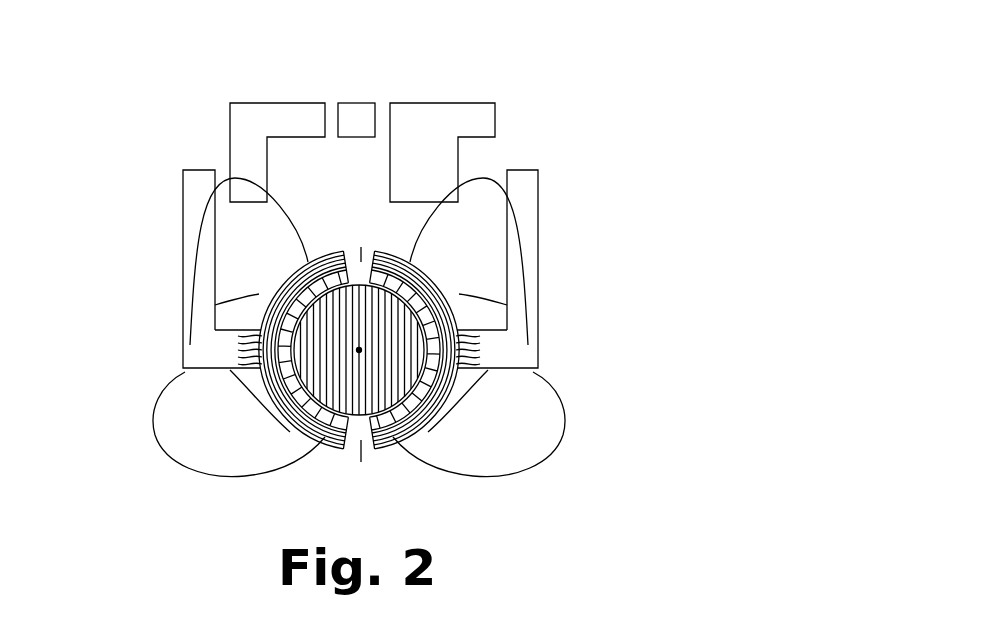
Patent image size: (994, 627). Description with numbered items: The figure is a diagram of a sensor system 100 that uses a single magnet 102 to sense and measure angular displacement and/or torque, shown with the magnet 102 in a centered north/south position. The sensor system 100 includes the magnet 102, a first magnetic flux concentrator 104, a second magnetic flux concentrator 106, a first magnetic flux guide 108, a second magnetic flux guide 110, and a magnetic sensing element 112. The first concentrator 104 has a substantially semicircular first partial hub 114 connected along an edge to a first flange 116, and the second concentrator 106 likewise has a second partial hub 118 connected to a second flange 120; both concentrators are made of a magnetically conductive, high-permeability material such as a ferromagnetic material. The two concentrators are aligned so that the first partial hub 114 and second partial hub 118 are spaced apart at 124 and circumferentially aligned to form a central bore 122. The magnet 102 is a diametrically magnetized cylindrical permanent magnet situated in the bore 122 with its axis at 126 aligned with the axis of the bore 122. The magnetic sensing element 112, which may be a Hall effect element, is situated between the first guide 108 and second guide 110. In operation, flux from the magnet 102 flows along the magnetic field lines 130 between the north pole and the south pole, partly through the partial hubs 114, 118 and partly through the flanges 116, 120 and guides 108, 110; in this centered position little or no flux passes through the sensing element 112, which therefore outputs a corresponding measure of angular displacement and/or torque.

The sensor system 100 is at (558, 55).
The magnet 102 is at (340, 442).
The first magnetic flux concentrator 104 is at (195, 411).
The second magnetic flux concentrator 106 is at (528, 408).
The first magnetic flux guide 108 is at (250, 104).
The second magnetic flux guide 110 is at (452, 108).
The magnetic sensing element 112 is at (353, 107).
The first partial hub 114 is at (298, 273).
The first flange 116 is at (193, 205).
The second partial hub 118 is at (418, 271).
The second flange 120 is at (538, 192).
The central bore 122 is at (325, 257).
The spacing between partial hubs 124 is at (373, 247).
The axis 126 is at (361, 350).
The magnetic field lines 130 is at (262, 300).